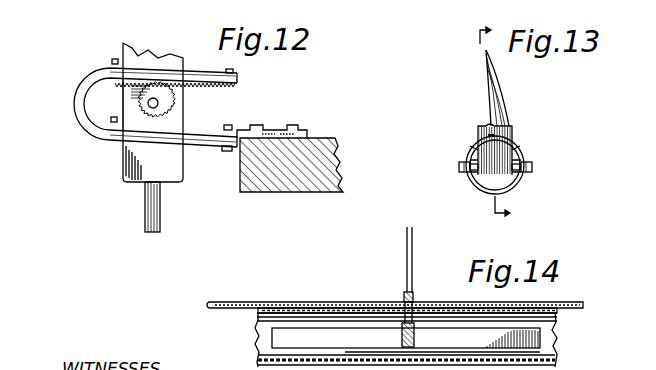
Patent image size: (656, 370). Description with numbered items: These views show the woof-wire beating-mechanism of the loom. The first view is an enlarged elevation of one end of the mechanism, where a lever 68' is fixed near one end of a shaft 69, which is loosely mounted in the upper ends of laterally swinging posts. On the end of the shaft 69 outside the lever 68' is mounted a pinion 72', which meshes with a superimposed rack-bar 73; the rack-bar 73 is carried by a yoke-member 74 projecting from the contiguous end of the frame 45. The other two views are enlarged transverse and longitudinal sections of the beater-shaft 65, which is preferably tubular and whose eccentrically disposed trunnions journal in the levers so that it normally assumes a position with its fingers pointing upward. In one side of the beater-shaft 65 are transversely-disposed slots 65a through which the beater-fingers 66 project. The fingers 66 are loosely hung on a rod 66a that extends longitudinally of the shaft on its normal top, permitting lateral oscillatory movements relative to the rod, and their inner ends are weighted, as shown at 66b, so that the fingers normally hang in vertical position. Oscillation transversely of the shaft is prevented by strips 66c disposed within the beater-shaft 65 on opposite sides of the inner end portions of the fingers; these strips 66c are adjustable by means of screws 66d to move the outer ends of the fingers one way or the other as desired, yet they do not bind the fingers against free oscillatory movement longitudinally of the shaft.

In FIG. 12, the frame 45 is at (292, 193).
In FIG. 12, the lever 68' is at (153, 137).
In FIG. 12, the shaft 69 is at (158, 105).
In FIG. 12, the pinion 72' is at (114, 104).
In FIG. 12, the rack-bar 73 is at (203, 86).
In FIG. 12, the yoke-member 74 is at (92, 130).
In FIG. 13, the beater-shaft 65 is at (520, 150).
In FIG. 13, the transversely-disposed slots 65a is at (488, 150).
In FIG. 14, the transversely-disposed slots 65a is at (440, 299).
In FIG. 13, the beater-fingers 66 is at (502, 100).
In FIG. 14, the beater-fingers 66 is at (407, 255).
In FIG. 13, the rod 66a is at (512, 128).
In FIG. 14, the rod 66a is at (318, 294).
In FIG. 14, the weighted inner ends 66b is at (414, 338).
In FIG. 13, the strips 66c is at (530, 182).
In FIG. 13, the screws 66d is at (545, 167).